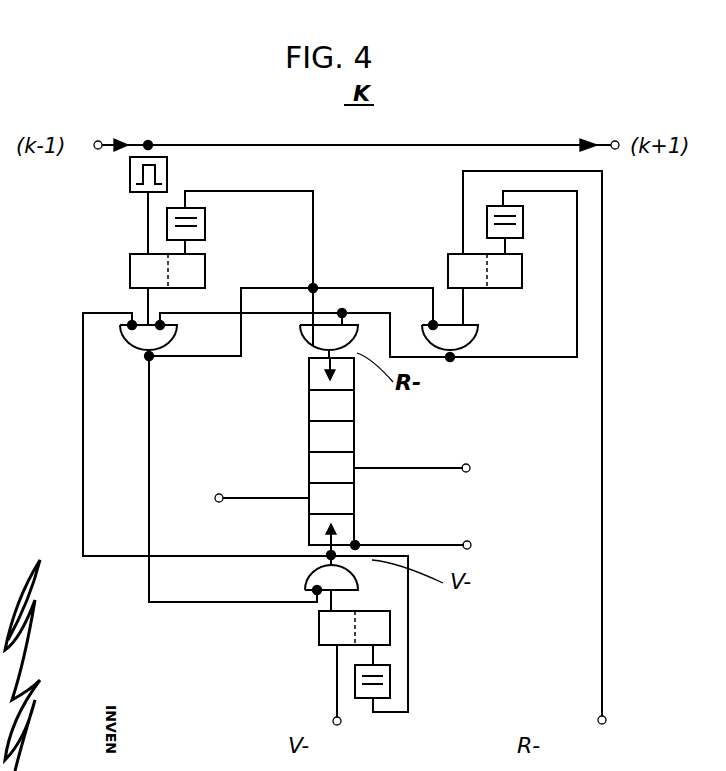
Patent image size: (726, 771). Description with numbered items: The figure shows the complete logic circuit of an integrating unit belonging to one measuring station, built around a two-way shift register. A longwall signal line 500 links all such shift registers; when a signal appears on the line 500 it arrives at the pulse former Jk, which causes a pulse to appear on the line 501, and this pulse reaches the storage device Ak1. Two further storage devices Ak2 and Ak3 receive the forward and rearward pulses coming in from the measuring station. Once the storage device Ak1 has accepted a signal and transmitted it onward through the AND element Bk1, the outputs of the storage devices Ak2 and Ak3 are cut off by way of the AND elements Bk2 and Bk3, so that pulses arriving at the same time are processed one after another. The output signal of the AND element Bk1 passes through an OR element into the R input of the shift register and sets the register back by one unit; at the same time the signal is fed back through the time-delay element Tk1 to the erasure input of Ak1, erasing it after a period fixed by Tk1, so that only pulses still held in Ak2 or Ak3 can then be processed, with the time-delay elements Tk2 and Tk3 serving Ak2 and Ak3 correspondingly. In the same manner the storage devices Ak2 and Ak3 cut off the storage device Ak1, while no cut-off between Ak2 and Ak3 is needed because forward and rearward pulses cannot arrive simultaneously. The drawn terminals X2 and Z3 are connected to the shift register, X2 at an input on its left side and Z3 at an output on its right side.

The longwall signal line 500 is at (423, 145).
The line 501 is at (146, 218).
The pulse former Jk is at (125, 178).
The time-delay element Tk1 is at (240, 268).
The storage device Ak1 is at (141, 277).
The AND element Bk1 is at (170, 324).
The time-delay element Tk2 is at (525, 230).
The storage device Ak2 is at (462, 273).
The AND element Bk2 is at (474, 325).
The time-delay element Tk3 is at (406, 675).
The storage device Ak3 is at (325, 635).
The AND element Bk3 is at (306, 588).
The input terminal X2 is at (251, 481).
The output terminal Z3 is at (412, 454).